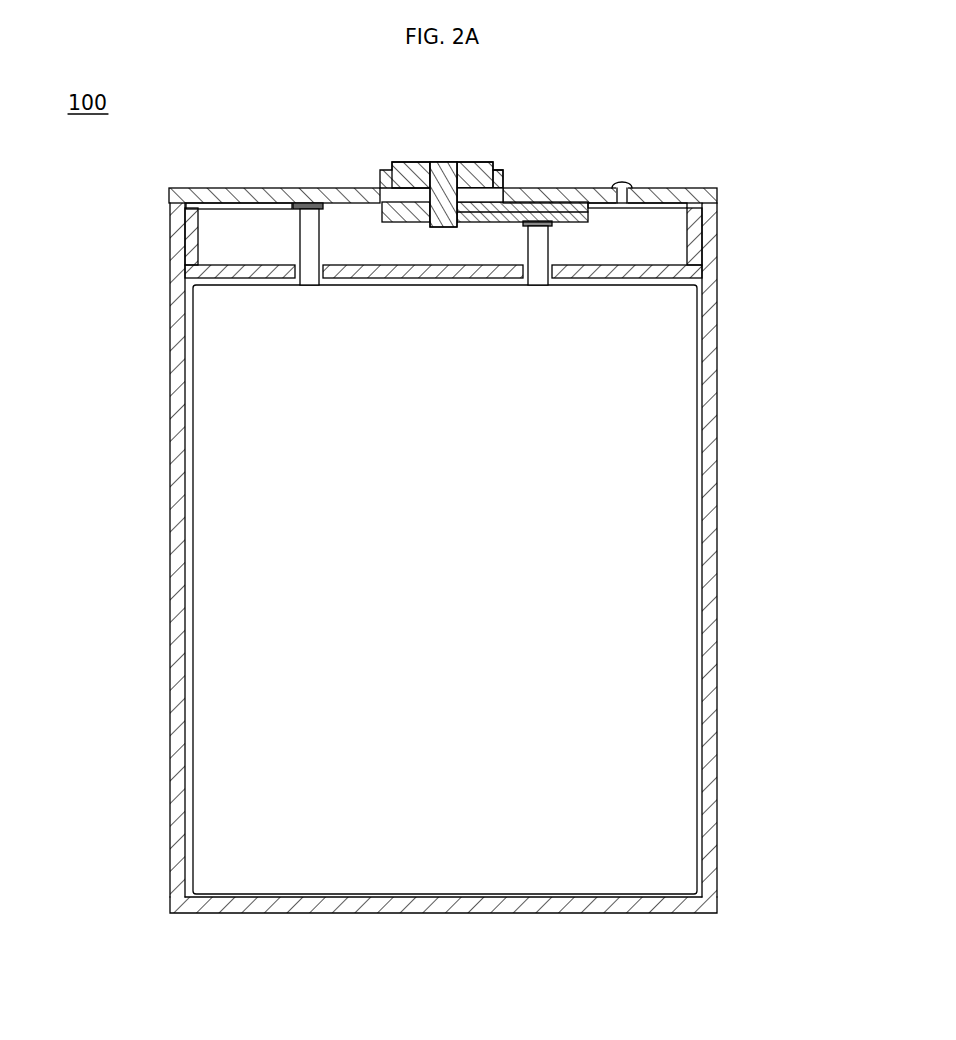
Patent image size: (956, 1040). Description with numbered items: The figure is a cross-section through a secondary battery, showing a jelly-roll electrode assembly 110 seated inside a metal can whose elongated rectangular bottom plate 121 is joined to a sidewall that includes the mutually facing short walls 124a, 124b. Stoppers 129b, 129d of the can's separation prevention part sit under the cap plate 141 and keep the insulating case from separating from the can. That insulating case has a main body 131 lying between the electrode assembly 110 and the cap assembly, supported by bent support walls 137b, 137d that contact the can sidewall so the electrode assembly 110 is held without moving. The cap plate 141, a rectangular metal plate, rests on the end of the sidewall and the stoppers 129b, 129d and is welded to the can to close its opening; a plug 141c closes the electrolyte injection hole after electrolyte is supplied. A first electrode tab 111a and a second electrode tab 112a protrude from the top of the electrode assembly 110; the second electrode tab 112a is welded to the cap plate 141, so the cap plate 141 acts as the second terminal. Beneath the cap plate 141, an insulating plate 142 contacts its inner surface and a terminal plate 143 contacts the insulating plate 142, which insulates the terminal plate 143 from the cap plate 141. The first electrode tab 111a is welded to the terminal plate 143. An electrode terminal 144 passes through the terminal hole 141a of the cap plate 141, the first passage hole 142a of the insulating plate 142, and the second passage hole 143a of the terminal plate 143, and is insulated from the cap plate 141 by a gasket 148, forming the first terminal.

The electrode assembly 110 is at (218, 689).
The first electrode tab 111a is at (532, 252).
The second electrode tab 112a is at (297, 202).
The bottom plate 121 is at (305, 905).
The short wall 124a is at (178, 480).
The short wall 124b is at (716, 475).
The stopper 129b is at (690, 207).
The stopper 129d is at (210, 203).
The main body 131 is at (223, 272).
The bent support wall 137b is at (700, 236).
The bent support wall 137d is at (192, 240).
The cap plate 141 is at (681, 196).
The terminal hole 141a is at (487, 174).
The plug 141c is at (619, 182).
The insulating plate 142 is at (597, 208).
The first passage hole 142a is at (440, 182).
The terminal plate 143 is at (570, 213).
The second passage hole 143a is at (460, 182).
The electrode terminal 144 is at (443, 178).
The gasket 148 is at (388, 174).